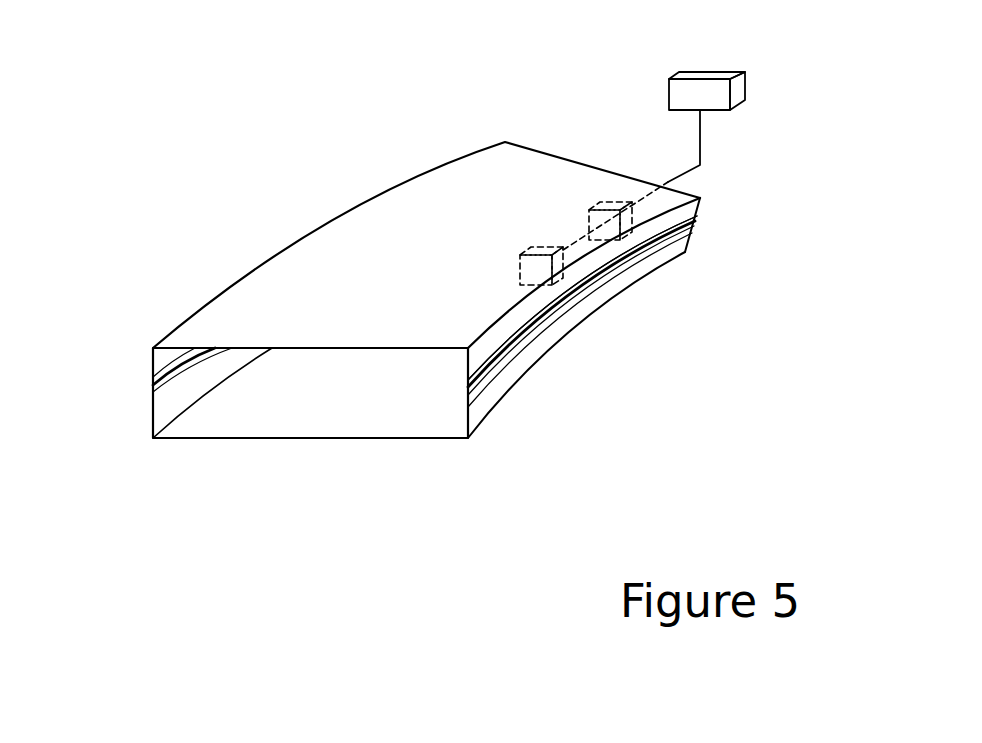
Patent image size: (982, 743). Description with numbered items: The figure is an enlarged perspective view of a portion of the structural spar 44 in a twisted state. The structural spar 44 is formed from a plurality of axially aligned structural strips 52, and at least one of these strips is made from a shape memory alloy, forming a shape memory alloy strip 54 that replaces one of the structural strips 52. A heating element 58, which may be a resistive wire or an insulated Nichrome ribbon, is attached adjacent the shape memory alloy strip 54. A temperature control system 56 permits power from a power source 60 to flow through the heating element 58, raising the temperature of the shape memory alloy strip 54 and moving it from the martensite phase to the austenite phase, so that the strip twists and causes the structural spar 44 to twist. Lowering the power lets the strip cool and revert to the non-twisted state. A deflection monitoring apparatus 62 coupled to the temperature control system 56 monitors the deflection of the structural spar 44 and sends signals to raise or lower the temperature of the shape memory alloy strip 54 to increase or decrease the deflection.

The structural spar 44 is at (408, 97).
The structural strips 52 is at (348, 247).
The shape memory alloy strips 54 is at (686, 232).
The temperature control system 56 is at (618, 200).
The heating element 58 is at (488, 380).
The power source 60 is at (718, 73).
The deflection monitoring apparatus 62 is at (545, 247).